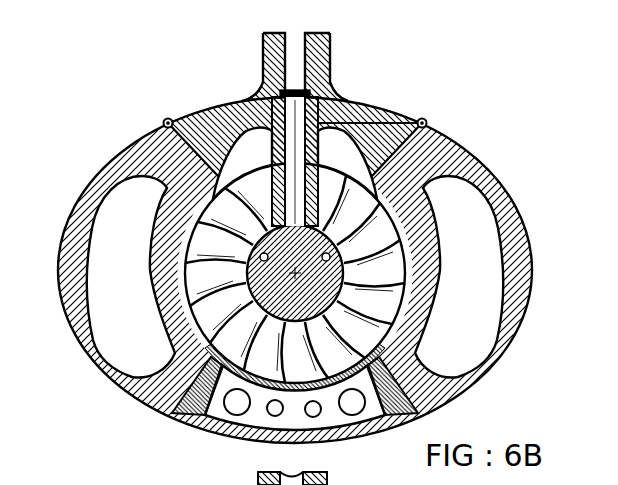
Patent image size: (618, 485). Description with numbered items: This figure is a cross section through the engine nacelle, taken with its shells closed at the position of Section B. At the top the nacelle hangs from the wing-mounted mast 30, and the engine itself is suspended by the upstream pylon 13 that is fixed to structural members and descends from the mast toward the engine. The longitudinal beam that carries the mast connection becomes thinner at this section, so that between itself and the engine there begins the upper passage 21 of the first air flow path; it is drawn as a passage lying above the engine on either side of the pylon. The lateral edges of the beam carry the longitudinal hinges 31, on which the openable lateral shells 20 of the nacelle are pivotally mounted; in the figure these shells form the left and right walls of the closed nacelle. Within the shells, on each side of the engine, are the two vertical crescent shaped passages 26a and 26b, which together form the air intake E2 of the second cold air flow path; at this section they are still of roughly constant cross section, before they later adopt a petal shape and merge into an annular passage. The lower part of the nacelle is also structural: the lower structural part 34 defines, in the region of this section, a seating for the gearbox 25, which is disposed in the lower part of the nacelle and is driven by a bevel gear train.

The upstream pylon 13 is at (353, 105).
The openable lateral shells 20 is at (82, 312).
The upper passage 21 is at (352, 153).
The gearbox 25 is at (248, 418).
The crescent shaped passage 26a is at (120, 213).
The crescent shaped passage 26b is at (462, 198).
The wing-mounted mast 30 is at (262, 52).
The longitudinal hinges 31 is at (165, 122).
The lower structural part 34 is at (185, 409).
The air intake E2 is at (296, 267).